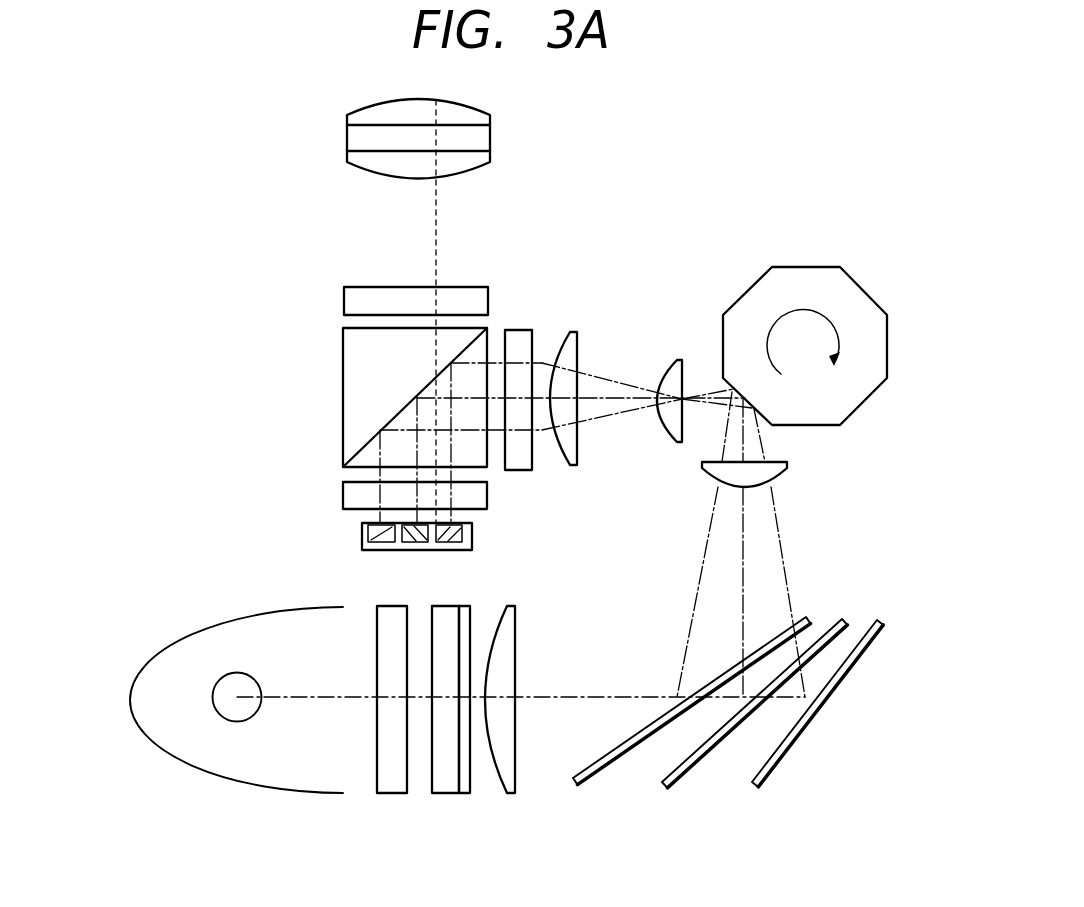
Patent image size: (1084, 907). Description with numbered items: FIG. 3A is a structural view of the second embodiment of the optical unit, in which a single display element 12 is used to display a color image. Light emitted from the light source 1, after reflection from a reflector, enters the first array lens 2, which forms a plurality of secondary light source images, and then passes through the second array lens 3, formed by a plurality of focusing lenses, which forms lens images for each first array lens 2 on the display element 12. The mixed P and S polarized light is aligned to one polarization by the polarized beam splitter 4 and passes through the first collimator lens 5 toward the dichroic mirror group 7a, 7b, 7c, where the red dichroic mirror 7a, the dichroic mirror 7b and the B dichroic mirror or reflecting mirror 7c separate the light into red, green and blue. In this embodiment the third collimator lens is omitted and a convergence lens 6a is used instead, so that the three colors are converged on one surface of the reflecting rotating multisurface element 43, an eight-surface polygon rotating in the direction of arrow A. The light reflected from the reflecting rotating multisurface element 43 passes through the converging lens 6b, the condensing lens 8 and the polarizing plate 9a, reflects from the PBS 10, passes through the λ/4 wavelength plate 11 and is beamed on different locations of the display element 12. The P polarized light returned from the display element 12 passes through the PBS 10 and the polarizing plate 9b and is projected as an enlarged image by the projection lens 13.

The light source 1 is at (240, 781).
The first array lens 2 is at (390, 793).
The second array lens 3 is at (442, 795).
The polarized beam splitter 4 is at (463, 795).
The first collimator lens 5 is at (510, 795).
The convergence lens 6a is at (788, 470).
The green dichroic mirror 6b is at (669, 369).
The red dichroic mirror 7a is at (590, 791).
The dichroic mirror 7b is at (677, 791).
The B dichroic mirror or reflecting mirror 7c is at (767, 791).
The condensing lens 8 is at (561, 342).
The polarizing plate 9a is at (517, 334).
The polarizing plate 9b is at (344, 300).
The PBS 10 is at (346, 374).
The λ/4 wavelength plate 11 is at (346, 492).
The display element 12 is at (362, 535).
The projection lens 13 is at (347, 128).
The reflecting rotating multisurface element 43 is at (813, 277).